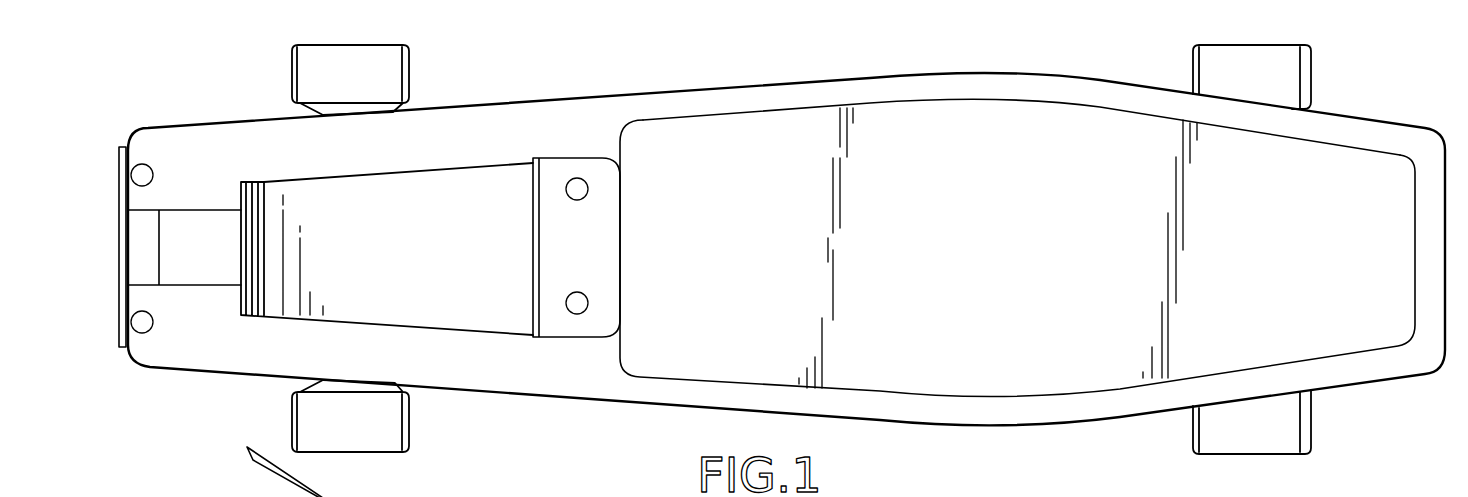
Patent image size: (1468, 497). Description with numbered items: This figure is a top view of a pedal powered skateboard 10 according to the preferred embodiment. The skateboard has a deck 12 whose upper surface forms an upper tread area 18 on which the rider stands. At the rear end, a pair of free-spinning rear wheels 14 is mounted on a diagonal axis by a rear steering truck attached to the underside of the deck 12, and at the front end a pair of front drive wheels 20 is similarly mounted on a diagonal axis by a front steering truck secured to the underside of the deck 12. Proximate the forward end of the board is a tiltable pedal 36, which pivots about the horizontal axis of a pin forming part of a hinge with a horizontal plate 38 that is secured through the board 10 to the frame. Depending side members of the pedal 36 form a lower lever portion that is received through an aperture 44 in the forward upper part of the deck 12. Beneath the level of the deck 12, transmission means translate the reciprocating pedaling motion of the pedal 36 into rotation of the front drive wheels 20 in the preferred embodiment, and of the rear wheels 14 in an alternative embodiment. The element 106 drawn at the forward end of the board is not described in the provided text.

The pedal powered skateboard 10 is at (1063, 74).
The deck 12 is at (782, 97).
The rear wheels 14 is at (1313, 83).
The upper tread area 18 is at (1018, 259).
The front drive wheels 20 is at (410, 80).
The tiltable pedal 36 is at (343, 187).
The horizontal plate 38 is at (558, 177).
The aperture 44 is at (196, 285).
The front bumper plate 106 is at (122, 315).